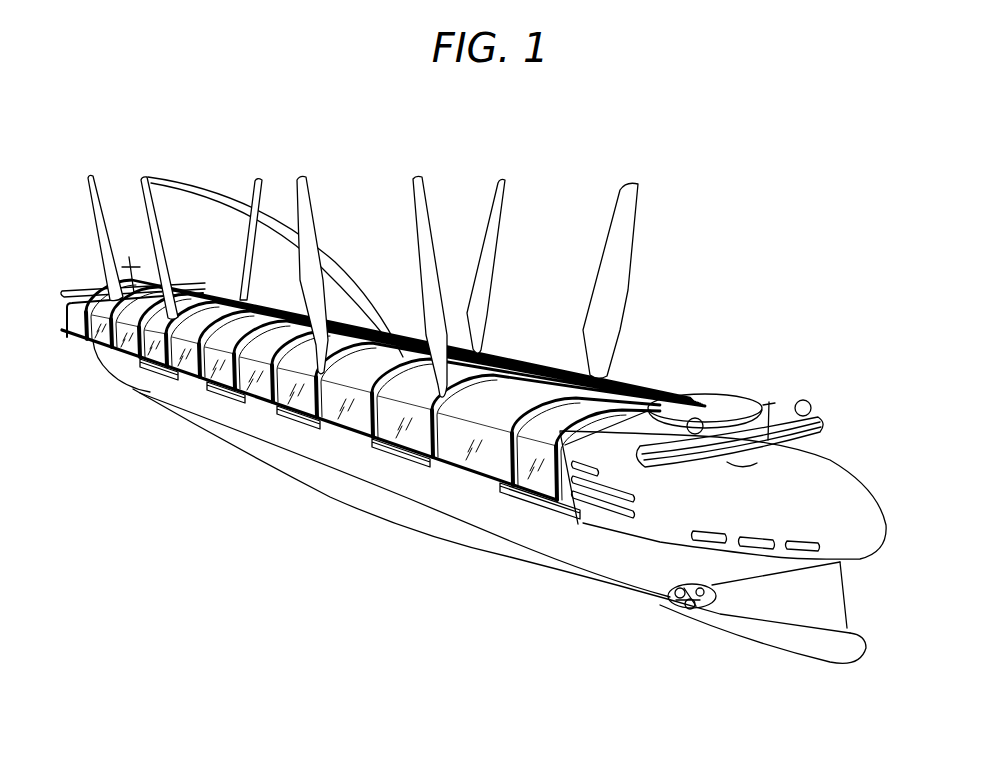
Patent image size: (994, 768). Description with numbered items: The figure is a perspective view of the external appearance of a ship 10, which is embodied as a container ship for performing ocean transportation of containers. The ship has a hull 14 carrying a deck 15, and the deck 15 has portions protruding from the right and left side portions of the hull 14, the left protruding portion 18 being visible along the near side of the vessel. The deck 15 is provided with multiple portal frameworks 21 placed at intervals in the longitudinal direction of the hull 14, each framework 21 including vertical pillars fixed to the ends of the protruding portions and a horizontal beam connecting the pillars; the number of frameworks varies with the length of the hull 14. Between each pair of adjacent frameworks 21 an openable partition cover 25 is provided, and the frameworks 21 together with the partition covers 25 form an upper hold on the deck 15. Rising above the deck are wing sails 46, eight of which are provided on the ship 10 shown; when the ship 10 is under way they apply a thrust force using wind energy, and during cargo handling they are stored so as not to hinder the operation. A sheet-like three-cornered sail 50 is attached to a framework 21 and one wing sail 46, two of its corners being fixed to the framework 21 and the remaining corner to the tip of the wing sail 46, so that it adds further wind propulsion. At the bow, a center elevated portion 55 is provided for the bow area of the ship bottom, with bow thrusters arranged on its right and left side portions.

The ship 10 is at (657, 366).
The hull 14 is at (308, 479).
The deck 15 is at (542, 501).
The left protruding portion 18 is at (253, 402).
The portal framework 21 is at (108, 346).
The partition cover 25 is at (185, 364).
The wing sail 46 is at (99, 217).
The three-cornered sail 50 is at (282, 224).
The center elevated portion 55 is at (767, 630).